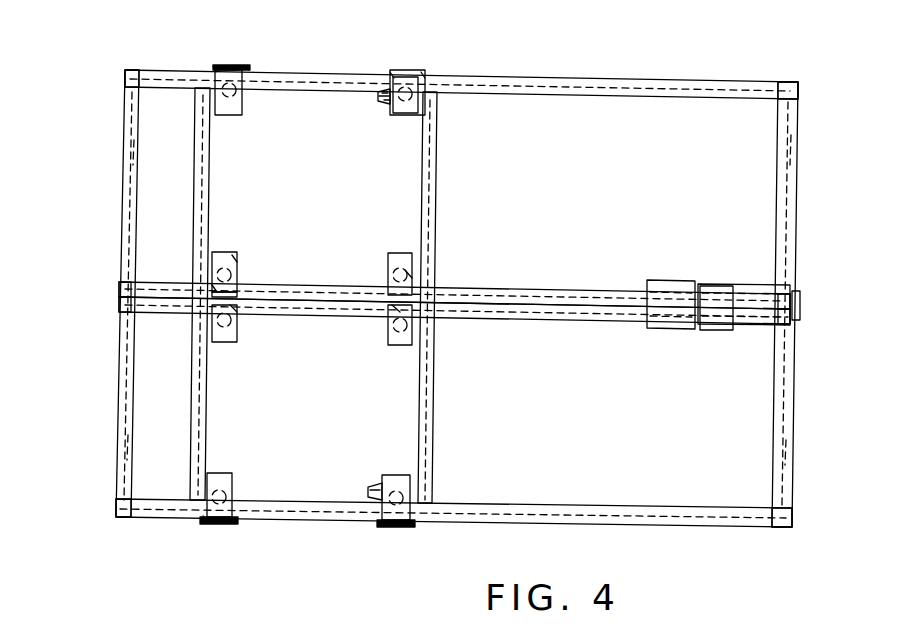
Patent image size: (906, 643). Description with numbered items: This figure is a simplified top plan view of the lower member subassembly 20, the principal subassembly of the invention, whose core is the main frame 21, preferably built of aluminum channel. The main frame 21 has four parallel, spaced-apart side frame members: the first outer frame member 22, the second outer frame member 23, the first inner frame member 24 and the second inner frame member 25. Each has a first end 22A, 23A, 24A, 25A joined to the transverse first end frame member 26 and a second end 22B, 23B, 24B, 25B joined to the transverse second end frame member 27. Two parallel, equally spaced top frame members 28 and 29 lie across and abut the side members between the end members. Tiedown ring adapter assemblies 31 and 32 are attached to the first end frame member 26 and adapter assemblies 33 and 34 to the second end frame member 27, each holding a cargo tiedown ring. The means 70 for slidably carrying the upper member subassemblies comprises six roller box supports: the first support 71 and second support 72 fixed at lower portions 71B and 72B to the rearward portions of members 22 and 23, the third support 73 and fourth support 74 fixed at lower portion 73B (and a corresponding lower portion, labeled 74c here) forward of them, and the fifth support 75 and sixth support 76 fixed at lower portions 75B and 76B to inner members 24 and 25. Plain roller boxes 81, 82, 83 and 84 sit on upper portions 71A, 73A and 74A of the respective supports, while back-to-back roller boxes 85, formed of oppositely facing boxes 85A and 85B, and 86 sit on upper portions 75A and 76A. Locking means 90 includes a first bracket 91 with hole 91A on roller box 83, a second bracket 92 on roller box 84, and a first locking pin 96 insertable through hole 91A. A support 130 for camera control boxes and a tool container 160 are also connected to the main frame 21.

The lower member subassembly 20 is at (612, 75).
The main frame 21 is at (703, 82).
The first outer frame member 22 is at (487, 93).
The first end of first outer frame member 22A is at (138, 76).
The second end of first outer frame member 22B is at (785, 88).
The second outer frame member 23 is at (603, 510).
The first end of second outer frame member 23A is at (120, 508).
The second end of second outer frame member 23B is at (792, 513).
The first inner frame member 24 is at (520, 290).
The first end of first inner frame member 24A is at (128, 290).
The second end of first inner frame member 24B is at (790, 283).
The second inner frame member 25 is at (468, 318).
The first end of second inner frame member 25A is at (128, 308).
The second end of second inner frame member 25B is at (790, 326).
The first end frame member 26 is at (130, 228).
The second end frame member 27 is at (782, 215).
The first top frame member 28 is at (206, 183).
The second top frame member 29 is at (438, 192).
The tiedown ring adapter assembly 31 is at (135, 152).
The tiedown ring adapter assembly 32 is at (132, 447).
The tiedown ring adapter assembly 33 is at (790, 148).
The tiedown ring adapter assembly 34 is at (790, 452).
The means for detachably connecting and slidably moving the upper member subassembli 70 is at (323, 511).
The first roller box support 71 is at (248, 78).
The upper portion of first roller box support 71A is at (215, 72).
The lower portion of first roller box support 71B is at (247, 70).
The second roller box support 72 is at (226, 516).
The lower portion of second roller box support 72B is at (232, 525).
The third roller box support 73 is at (409, 88).
The upper portion of third roller box support 73A is at (393, 70).
The lower portion of third roller box support 73B is at (425, 72).
The fourth roller box support 74 is at (395, 501).
The upper portion of fourth roller box support 74A is at (380, 526).
The bracket flange 74c is at (413, 528).
The fifth roller box support 75 is at (232, 296).
The upper portion of fifth roller box support 75A is at (215, 290).
The lower portion of fifth roller box support 75B is at (237, 320).
The sixth roller box support 76 is at (392, 270).
The upper portion of sixth roller box support 76A is at (395, 312).
The lower portion of sixth roller box support 76B is at (410, 275).
The first plain roller box 81 is at (243, 100).
The second plain roller box 82 is at (247, 474).
The third plain roller box 83 is at (397, 118).
The fourth plain roller box 84 is at (397, 475).
The first back-to-back plain roller box 85 is at (222, 255).
The plain roller box of first back-to-back box 85A is at (237, 262).
The plain roller box of first back-to-back box 85B is at (222, 343).
The second back-to-back plain roller box 86 is at (400, 346).
The means for locking the upper member subassemblies 90 is at (372, 103).
The first bracket 91 is at (380, 95).
The hole in first bracket 91A is at (350, 42).
The second bracket 92 is at (380, 492).
The first locking pin 96 is at (385, 107).
The support 130 is at (745, 330).
The container 160 is at (665, 280).